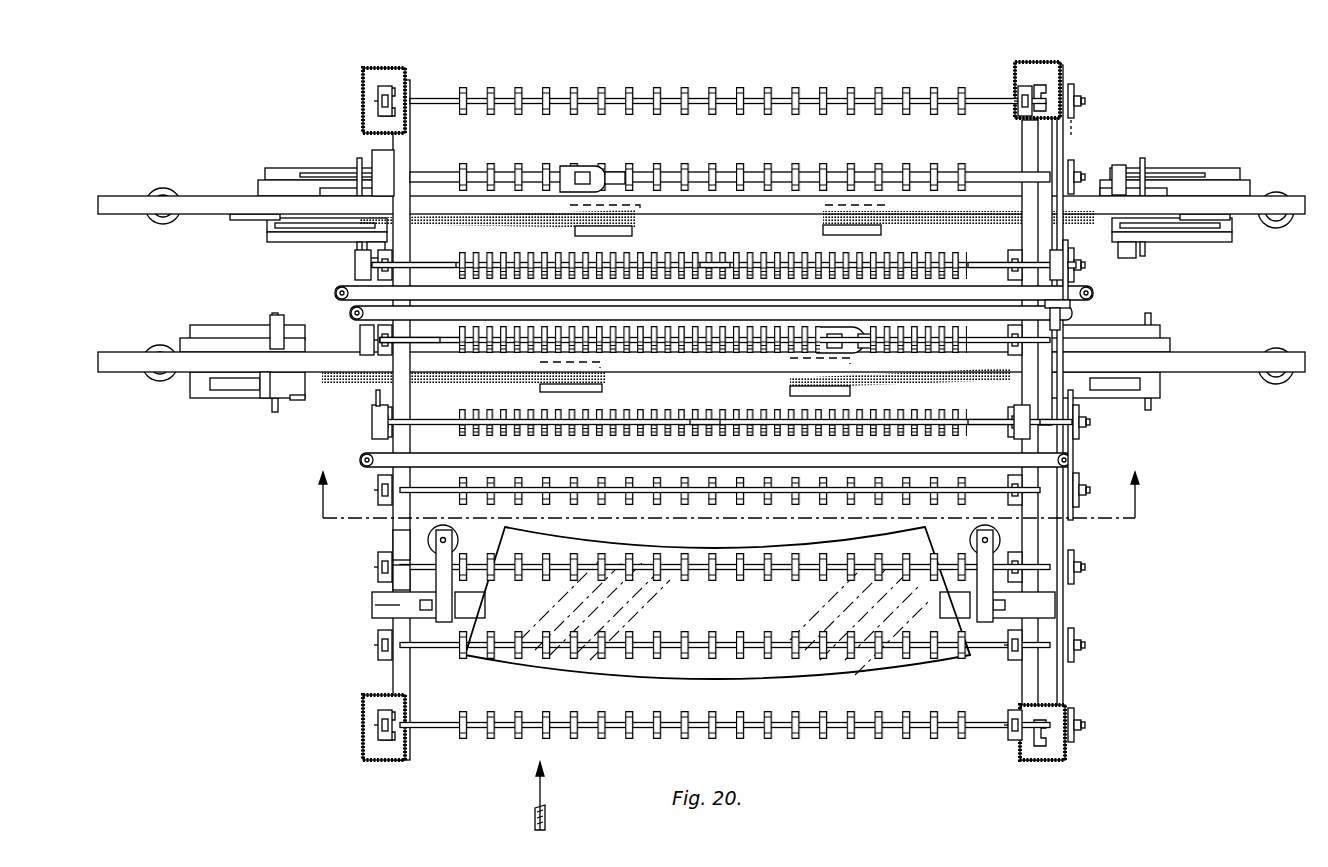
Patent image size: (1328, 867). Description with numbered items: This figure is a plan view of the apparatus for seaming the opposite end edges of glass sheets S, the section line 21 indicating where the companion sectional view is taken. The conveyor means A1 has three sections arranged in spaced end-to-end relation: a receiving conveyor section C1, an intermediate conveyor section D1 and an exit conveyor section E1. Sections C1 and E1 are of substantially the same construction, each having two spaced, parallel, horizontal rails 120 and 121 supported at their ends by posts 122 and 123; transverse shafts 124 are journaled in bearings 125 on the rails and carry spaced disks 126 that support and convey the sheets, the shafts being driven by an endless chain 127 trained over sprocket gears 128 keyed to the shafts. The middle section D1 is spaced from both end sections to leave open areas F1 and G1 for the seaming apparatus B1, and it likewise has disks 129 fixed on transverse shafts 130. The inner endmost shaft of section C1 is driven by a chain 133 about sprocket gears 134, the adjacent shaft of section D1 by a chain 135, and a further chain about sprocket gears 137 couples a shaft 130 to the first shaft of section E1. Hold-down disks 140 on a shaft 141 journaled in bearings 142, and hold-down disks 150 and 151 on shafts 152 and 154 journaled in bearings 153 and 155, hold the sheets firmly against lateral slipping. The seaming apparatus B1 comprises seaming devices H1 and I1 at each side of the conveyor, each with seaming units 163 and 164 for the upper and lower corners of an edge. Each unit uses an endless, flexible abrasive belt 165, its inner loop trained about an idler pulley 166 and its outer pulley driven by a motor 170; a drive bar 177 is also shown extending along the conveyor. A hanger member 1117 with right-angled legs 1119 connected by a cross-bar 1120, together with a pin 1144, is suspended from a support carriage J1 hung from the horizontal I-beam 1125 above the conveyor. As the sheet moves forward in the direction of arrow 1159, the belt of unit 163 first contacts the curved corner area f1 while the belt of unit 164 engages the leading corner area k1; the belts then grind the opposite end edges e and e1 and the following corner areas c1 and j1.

The horizontal rail 120 is at (1026, 140).
The horizontal rail 121 is at (400, 140).
The post 122 is at (1038, 85).
The post 123 is at (380, 88).
The shaft 124 is at (985, 104).
The bearing 125 is at (395, 92).
The disk 126 is at (712, 88).
The endless chain 127 is at (1063, 150).
The sprocket gear 128 is at (1075, 90).
The disk 129 is at (462, 256).
The transverse shaft 130 is at (1080, 266).
The chain 133 is at (1074, 475).
The sprocket gear 134 is at (1082, 418).
The chain 135 is at (376, 398).
The sprocket gear 137 is at (1085, 165).
The hold-down disk 140 is at (905, 412).
The shaft 141 is at (982, 420).
The bearing 142 is at (372, 422).
The hold-down disk 150 is at (655, 345).
The hold-down disk 151 is at (665, 255).
The shaft 152 is at (450, 342).
The bearing 153 is at (378, 345).
The shaft 154 is at (975, 262).
The bearing 155 is at (360, 265).
The seaming unit 163 is at (262, 166).
The seaming unit 164 is at (190, 325).
The abrasive belt 165 is at (560, 222).
The pulley 166 is at (580, 232).
The motor 170 is at (170, 225).
The drive bar 177 is at (470, 172).
The hanger member 1117 is at (350, 166).
The leg 1119 is at (295, 244).
The cross-bar 1120 is at (397, 176).
The horizontal I-beam 1125 is at (228, 200).
The pin 1144 is at (1142, 256).
The arrow 1159 is at (545, 793).
The section line 21 is at (727, 495).
The glass sheet S is at (508, 662).
The conveyor means A1 is at (370, 540).
The seaming apparatus B1 is at (262, 450).
The receiving conveyor section C1 is at (378, 578).
The intermediate conveyor section D1 is at (325, 290).
The exit conveyor section E1 is at (380, 150).
The open area F1 is at (704, 399).
The open area G1 is at (718, 243).
The seaming device H1 is at (303, 410).
The seaming device I1 is at (303, 165).
The support carriage J1 is at (1068, 338).
The leading corner area k1 is at (510, 530).
The curved corner area f1 is at (925, 530).
The end edge e1 is at (485, 605).
The end edge e is at (948, 605).
The following corner area j1 is at (462, 655).
The following corner area c1 is at (963, 660).